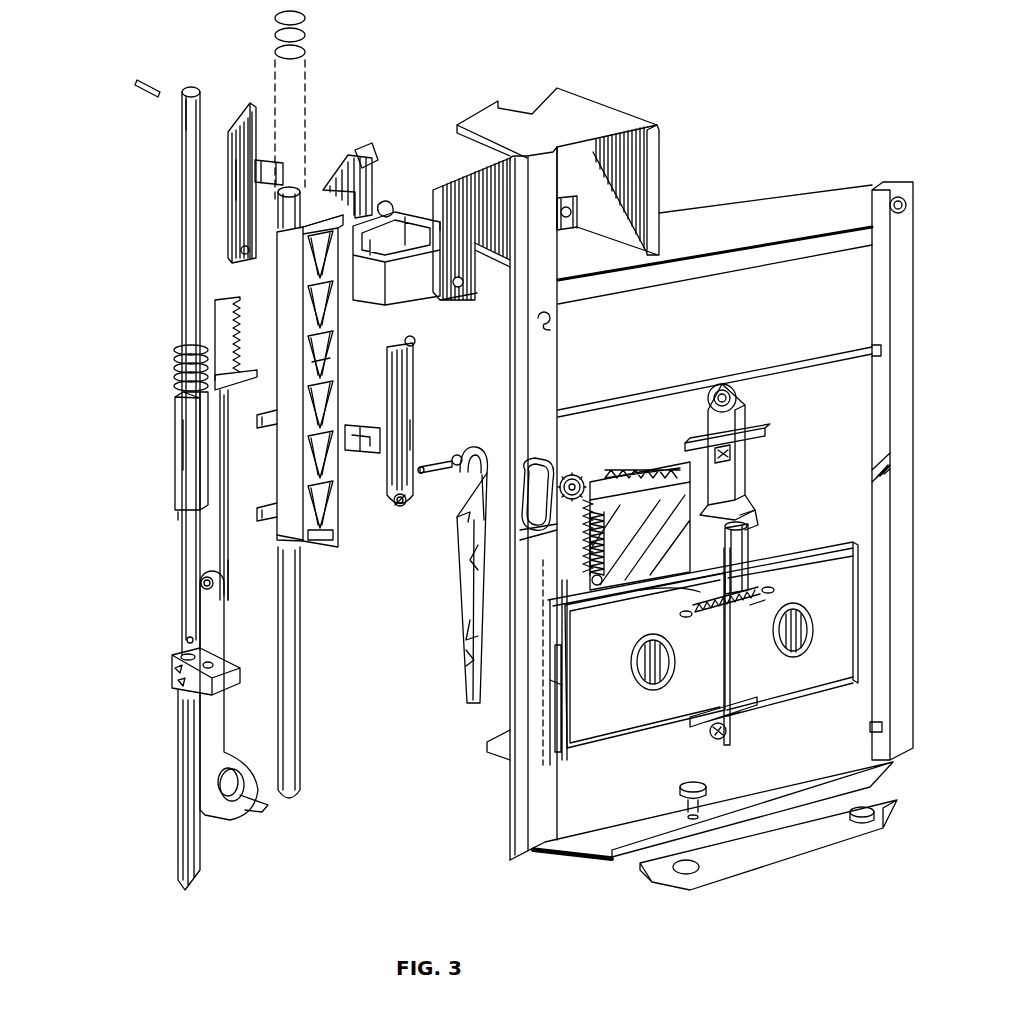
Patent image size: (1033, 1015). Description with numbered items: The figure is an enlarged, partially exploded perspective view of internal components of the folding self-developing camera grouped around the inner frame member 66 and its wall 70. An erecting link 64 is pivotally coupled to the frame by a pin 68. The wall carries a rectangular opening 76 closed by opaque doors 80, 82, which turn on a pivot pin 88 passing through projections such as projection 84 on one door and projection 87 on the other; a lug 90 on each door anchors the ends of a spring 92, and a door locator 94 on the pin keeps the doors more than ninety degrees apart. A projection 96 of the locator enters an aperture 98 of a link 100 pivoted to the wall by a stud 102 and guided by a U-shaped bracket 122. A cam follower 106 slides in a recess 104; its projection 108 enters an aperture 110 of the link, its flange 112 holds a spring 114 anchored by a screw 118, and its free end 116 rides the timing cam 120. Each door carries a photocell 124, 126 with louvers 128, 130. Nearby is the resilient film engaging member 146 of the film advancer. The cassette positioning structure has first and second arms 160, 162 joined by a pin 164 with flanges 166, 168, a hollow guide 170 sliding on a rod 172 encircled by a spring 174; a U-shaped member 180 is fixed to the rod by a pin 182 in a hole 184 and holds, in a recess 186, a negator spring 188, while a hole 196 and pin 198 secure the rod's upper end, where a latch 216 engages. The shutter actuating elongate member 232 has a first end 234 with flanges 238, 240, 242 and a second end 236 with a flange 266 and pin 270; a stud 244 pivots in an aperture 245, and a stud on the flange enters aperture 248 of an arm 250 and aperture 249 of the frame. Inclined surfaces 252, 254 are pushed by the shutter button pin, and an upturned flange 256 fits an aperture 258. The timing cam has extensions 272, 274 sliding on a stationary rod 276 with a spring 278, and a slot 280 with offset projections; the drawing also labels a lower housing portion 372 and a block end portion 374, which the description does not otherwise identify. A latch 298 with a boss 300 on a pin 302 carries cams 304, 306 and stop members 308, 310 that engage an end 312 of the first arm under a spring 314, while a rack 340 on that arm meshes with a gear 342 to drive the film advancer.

The erecting link 64 is at (778, 862).
The inner frame member 66 is at (769, 118).
The pin 68 is at (680, 788).
The wall 70 is at (845, 497).
The rectangular opening 76 is at (806, 565).
The door 80 is at (630, 728).
The door 82 is at (797, 688).
The projection 84 is at (738, 712).
The projection 87 is at (665, 590).
The pivot pin 88 is at (723, 686).
The lug 90 is at (680, 616).
The spring 92 is at (708, 612).
The door locator 94 is at (755, 600).
The projection 96 is at (750, 538).
The aperture 98 is at (745, 515).
The link 100 is at (736, 480).
The stud 102 is at (735, 404).
The laterally extending recess 104 is at (605, 470).
The cam follower 106 is at (655, 462).
The projection 108 is at (732, 462).
The aperture 110 is at (740, 452).
The flange 112 is at (678, 482).
The spring 114 is at (660, 497).
The free end 116 is at (535, 458).
The screw 118 is at (608, 507).
The timing cam 120 is at (341, 547).
The U-shaped bracket 122 is at (750, 428).
The photocell 124 is at (645, 688).
The photocell 126 is at (808, 645).
The louvers 128 is at (632, 656).
The louvers 130 is at (805, 624).
The resilient film engaging member 146 is at (560, 690).
The first arm 160 is at (222, 470).
The second arm 162 is at (225, 714).
The pin 164 is at (204, 582).
The flange 166 is at (232, 382).
The flange 168 is at (260, 810).
The hollow guide 170 is at (181, 445).
The rod 172 is at (182, 262).
The spring 174 is at (175, 367).
The U-shaped member 180 is at (172, 660).
The pin 182 is at (174, 672).
The hole 184 is at (186, 642).
The recess 186 is at (180, 686).
The negator spring 188 is at (178, 772).
The hole 196 is at (183, 108).
The pin 198 is at (133, 84).
The latch 216 is at (372, 145).
The elongate member 232 is at (400, 520).
The first end 234 is at (413, 345).
The second end 236 is at (412, 450).
The flange 238 is at (428, 281).
The flange 240 is at (335, 218).
The flange 242 is at (438, 225).
The stud 244 is at (412, 346).
The aperture 245 is at (550, 330).
The aperture 248 is at (246, 256).
The aperture 249 is at (458, 288).
The arm 250 is at (242, 176).
The inclined surface 252 is at (327, 185).
The inclined surface 254 is at (232, 123).
The upwardly turned flange 256 is at (272, 162).
The aperture 258 is at (385, 203).
The rearwardly extending flange 266 is at (358, 453).
The pin 270 is at (396, 508).
The extension 272 is at (176, 415).
The extension 274 is at (275, 520).
The stationary rod 276 is at (296, 660).
The spring 278 is at (305, 43).
The slot 280 is at (326, 372).
The latch 298 is at (472, 605).
The boss 300 is at (476, 446).
The pin 302 is at (436, 475).
The cam 304 is at (476, 560).
The cam 306 is at (466, 636).
The stop member 308 is at (462, 516).
The stop member 310 is at (468, 658).
The end 312 is at (229, 566).
The spring 314 is at (483, 516).
The rack 340 is at (258, 333).
The gear 342 is at (572, 474).
The housing bottom 372 is at (318, 555).
The block end 374 is at (185, 520).